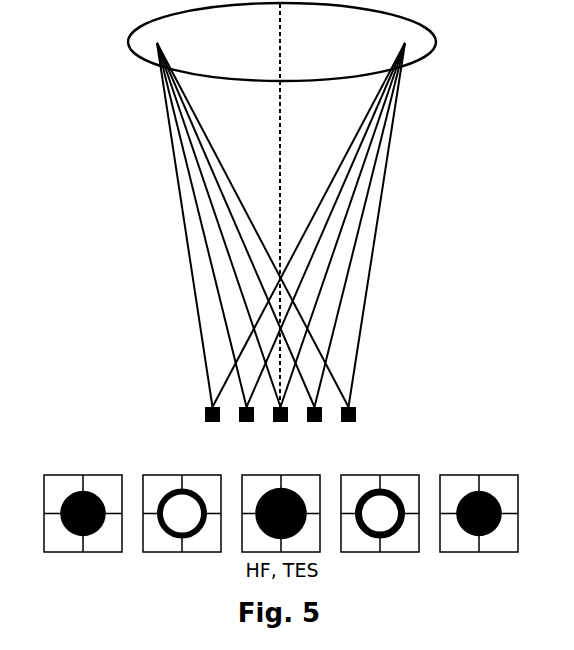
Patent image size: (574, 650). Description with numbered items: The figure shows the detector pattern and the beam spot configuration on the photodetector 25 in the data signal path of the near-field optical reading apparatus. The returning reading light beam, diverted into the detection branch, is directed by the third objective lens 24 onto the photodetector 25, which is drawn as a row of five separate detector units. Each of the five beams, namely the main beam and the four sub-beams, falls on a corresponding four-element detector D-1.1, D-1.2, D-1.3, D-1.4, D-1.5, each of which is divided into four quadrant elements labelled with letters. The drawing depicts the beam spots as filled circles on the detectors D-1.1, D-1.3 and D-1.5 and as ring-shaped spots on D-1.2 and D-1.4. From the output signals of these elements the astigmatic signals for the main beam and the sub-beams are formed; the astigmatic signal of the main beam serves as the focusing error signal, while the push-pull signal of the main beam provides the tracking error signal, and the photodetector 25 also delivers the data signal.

The third objective lens 24 is at (132, 60).
The photodetector 25 is at (378, 393).
The four-element detector D-1.1 is at (205, 422).
The four-element detector D-1.2 is at (240, 423).
The four-element detector D-1.3 is at (280, 422).
The four-element detector D-1.4 is at (321, 423).
The four-element detector D-1.5 is at (356, 422).